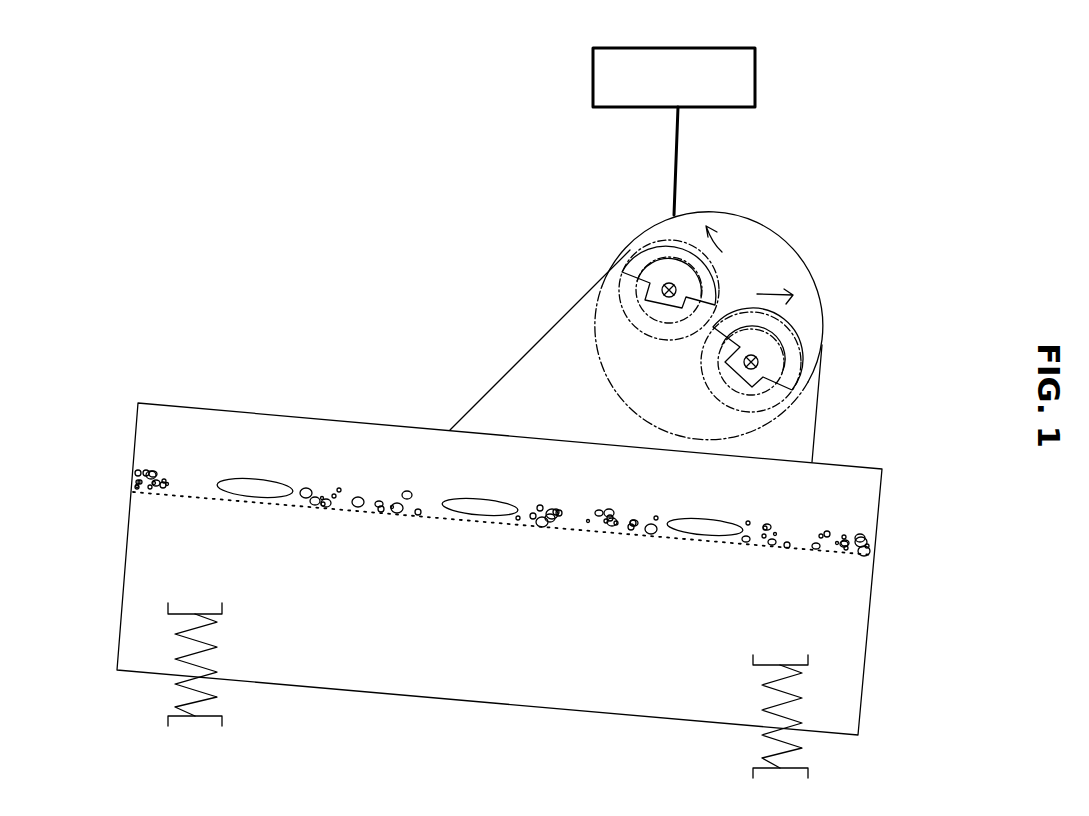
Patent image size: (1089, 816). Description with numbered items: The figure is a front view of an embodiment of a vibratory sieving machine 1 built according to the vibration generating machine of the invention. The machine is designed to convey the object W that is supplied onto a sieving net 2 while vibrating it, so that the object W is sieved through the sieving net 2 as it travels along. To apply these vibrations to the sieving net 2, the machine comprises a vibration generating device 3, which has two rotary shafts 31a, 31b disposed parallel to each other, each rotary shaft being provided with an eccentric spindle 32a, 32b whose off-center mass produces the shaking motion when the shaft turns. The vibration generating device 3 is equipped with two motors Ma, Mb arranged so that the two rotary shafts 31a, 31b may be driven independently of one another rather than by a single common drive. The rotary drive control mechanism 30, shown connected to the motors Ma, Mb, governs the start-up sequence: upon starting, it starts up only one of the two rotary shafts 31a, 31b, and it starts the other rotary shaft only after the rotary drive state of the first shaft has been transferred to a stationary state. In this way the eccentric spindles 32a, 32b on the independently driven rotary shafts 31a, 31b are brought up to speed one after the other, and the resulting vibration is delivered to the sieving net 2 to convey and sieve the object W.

The vibratory sieving machine 1 is at (882, 492).
The sieving net 2 is at (662, 538).
The object W is at (252, 487).
The vibration generating device 3 is at (690, 40).
The rotary drive control mechanism 30 is at (674, 131).
The motor Ma is at (669, 283).
The motor Mb is at (752, 354).
The rotary shaft 31a is at (640, 248).
The eccentric spindle 32a is at (722, 254).
The rotary shaft 31b is at (797, 294).
The eccentric spindle 32b is at (800, 327).